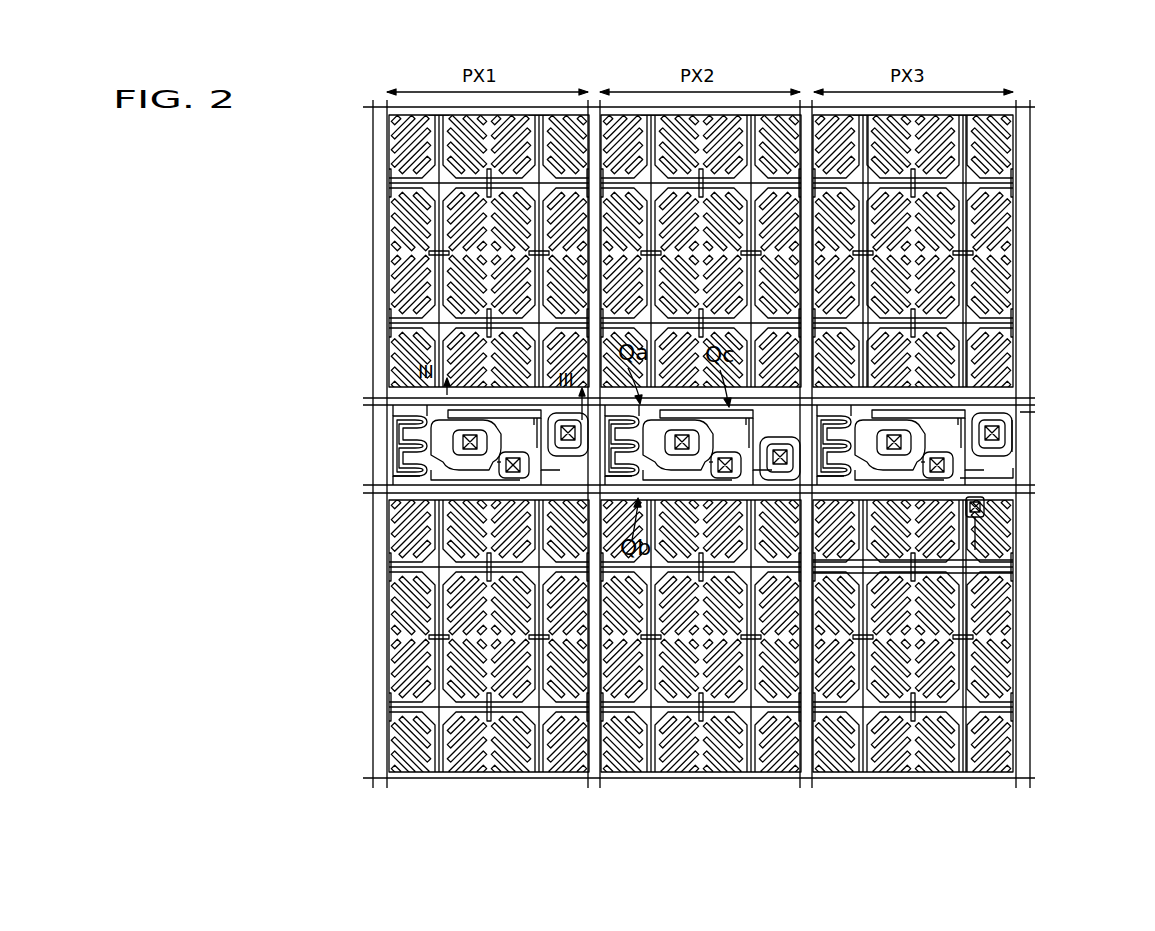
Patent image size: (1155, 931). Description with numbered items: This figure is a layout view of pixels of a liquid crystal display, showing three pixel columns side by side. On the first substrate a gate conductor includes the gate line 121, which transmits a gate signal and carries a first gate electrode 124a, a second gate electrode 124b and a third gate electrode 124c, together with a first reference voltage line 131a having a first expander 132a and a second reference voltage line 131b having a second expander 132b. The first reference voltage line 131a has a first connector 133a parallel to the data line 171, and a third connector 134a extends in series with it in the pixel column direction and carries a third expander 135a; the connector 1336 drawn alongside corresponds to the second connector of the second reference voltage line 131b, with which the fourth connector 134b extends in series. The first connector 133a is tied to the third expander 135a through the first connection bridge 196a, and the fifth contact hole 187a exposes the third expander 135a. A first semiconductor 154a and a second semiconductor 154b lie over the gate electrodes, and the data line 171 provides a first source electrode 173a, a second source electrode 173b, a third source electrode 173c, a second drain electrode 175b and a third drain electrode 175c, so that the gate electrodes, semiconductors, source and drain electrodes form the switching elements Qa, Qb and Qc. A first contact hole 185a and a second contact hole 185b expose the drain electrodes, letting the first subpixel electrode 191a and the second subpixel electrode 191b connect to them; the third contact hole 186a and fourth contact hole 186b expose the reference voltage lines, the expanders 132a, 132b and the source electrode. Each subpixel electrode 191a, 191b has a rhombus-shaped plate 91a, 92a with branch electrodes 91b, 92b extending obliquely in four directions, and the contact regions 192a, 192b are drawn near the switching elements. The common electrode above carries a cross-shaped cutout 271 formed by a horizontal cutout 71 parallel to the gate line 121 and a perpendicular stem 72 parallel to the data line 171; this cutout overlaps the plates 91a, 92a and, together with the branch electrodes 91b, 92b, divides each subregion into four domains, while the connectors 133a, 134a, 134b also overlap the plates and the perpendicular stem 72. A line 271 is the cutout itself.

The horizontal cutout 71 is at (505, 170).
The perpendicular stem 72 is at (546, 152).
The plate 91a is at (1012, 157).
The branch electrodes 91b is at (1005, 138).
The plate 92a is at (985, 725).
The branch electrodes 92b is at (1003, 748).
The gate line 121 is at (400, 403).
The first gate electrode 124a is at (395, 432).
The second gate electrode 124b is at (395, 461).
The third gate electrode 124c is at (545, 470).
The first reference voltage line 131a is at (400, 398).
The second reference voltage line 131b is at (392, 488).
The first expander 132a is at (520, 490).
The second expander 132b is at (1015, 390).
The first connector 133a is at (1000, 206).
The second storage connection 1336 is at (1000, 628).
The third connector 134a is at (1000, 690).
The fourth connector 134b is at (858, 135).
The third expander 135a is at (1010, 481).
The first semiconductor 154a is at (450, 432).
The second semiconductor 154b is at (455, 478).
The data line 171 is at (372, 143).
The cross-shaped cutout 271 is at (389, 192).
The first source electrode 173a is at (432, 430).
The second source electrode 173b is at (440, 470).
The third source electrode 173c is at (545, 412).
The second drain electrode 175b is at (500, 464).
The third drain electrode 175c is at (515, 420).
The first contact hole 185a is at (467, 440).
The second contact hole 185b is at (510, 468).
The third contact hole 186a is at (565, 440).
The fourth contact hole 186b is at (978, 518).
The fifth contact hole 187a is at (985, 505).
The first subpixel electrode 191a is at (1005, 262).
The second subpixel electrode 191b is at (1018, 665).
The first connecting member 192a is at (580, 470).
The second connecting member 192b is at (1000, 553).
The first connection bridge 196a is at (1015, 426).